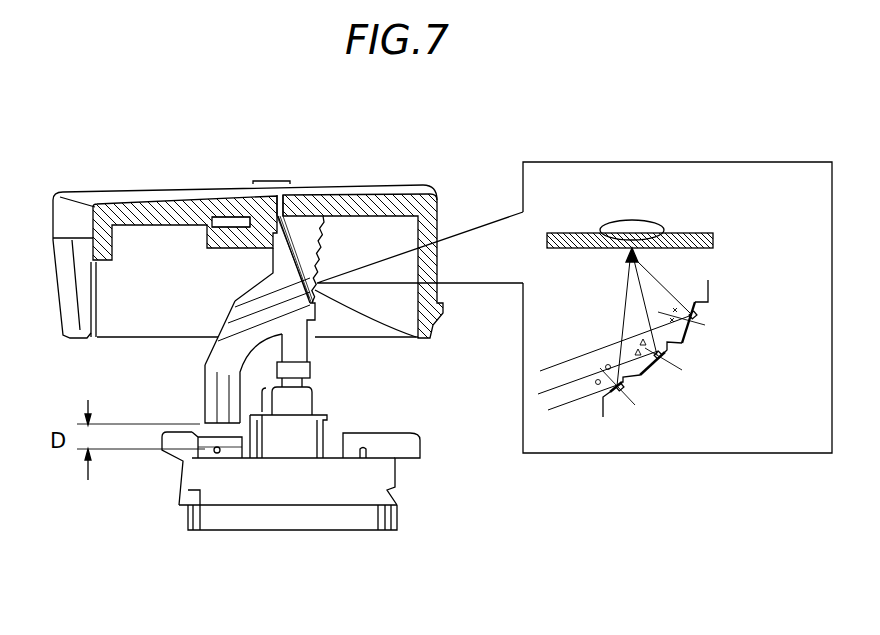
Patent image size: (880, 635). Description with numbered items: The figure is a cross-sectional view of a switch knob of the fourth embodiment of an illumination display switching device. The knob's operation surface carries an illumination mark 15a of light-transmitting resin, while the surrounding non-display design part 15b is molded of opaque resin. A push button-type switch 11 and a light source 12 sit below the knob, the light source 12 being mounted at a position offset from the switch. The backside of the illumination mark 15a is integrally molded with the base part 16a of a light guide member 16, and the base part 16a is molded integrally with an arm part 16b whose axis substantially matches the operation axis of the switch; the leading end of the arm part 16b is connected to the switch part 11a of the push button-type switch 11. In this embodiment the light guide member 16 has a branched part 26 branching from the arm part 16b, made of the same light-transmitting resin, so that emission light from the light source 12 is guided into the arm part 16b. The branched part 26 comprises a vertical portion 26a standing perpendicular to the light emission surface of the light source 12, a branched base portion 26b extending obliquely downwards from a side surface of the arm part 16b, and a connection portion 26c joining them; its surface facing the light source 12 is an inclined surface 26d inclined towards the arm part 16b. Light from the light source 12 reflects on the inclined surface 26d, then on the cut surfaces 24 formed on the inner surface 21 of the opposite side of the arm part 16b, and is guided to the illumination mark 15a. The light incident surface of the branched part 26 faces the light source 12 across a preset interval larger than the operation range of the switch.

The push button-type switch 11 is at (313, 400).
The switch part 11a is at (296, 332).
The light source 12 is at (222, 459).
The illumination mark 15a is at (270, 178).
The non-display design part 15b is at (137, 206).
The light guide member 16 is at (312, 237).
The base part 16a is at (237, 225).
The arm part 16b is at (315, 340).
The inner surface 21 is at (426, 338).
The cut surface 24 is at (683, 338).
The branched part 26 is at (203, 376).
The vertical portion 26a is at (203, 412).
The branched base portion 26b is at (262, 278).
The connection portion 26c is at (268, 405).
The inclined surface 26d is at (227, 316).